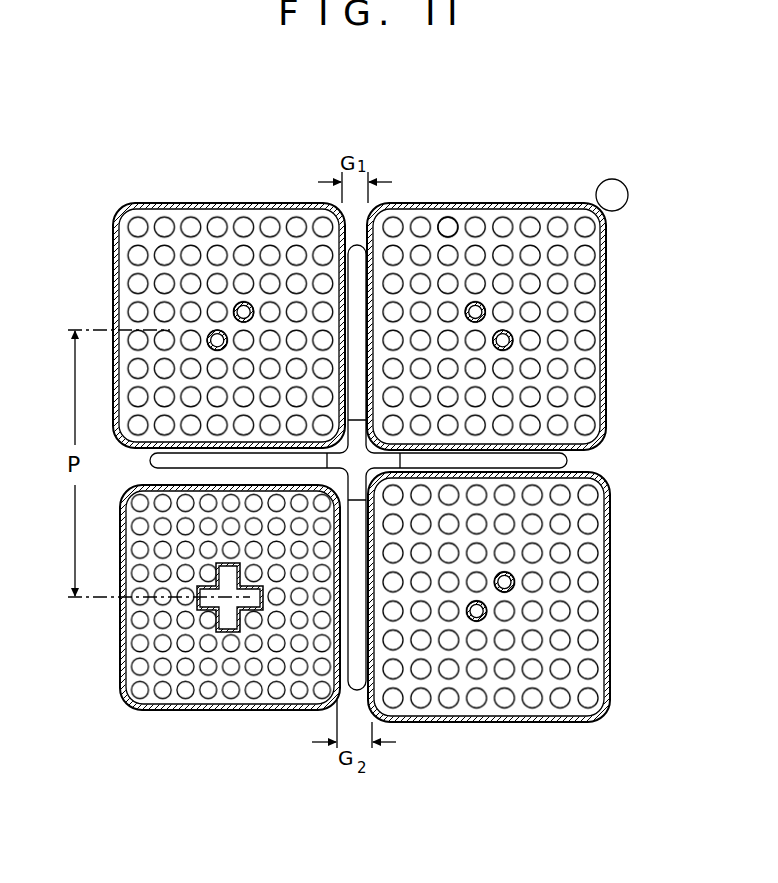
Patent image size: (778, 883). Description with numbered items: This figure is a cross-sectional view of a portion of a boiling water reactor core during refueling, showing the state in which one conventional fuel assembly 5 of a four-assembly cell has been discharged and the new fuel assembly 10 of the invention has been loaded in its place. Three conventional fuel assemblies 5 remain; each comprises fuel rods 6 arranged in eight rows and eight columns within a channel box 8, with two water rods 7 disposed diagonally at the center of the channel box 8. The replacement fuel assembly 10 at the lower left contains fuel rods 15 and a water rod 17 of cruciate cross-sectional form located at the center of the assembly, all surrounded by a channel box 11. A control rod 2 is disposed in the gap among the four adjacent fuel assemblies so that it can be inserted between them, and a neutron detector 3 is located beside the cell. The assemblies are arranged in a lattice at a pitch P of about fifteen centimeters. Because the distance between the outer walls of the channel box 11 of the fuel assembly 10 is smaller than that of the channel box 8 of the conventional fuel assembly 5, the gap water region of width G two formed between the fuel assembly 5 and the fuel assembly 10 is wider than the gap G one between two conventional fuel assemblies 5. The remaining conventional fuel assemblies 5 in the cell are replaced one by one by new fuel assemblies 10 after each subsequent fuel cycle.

The control rod 2 is at (568, 461).
The neutron detector 3 is at (612, 178).
The conventional fuel assembly 5 is at (388, 429).
The fuel rod 6 is at (452, 219).
The water rod 7 is at (477, 302).
The channel box 8 is at (606, 298).
The fuel assembly 10 is at (195, 624).
The channel box 11 is at (262, 712).
The fuel rod 15 is at (180, 702).
The water rod 17 is at (222, 633).